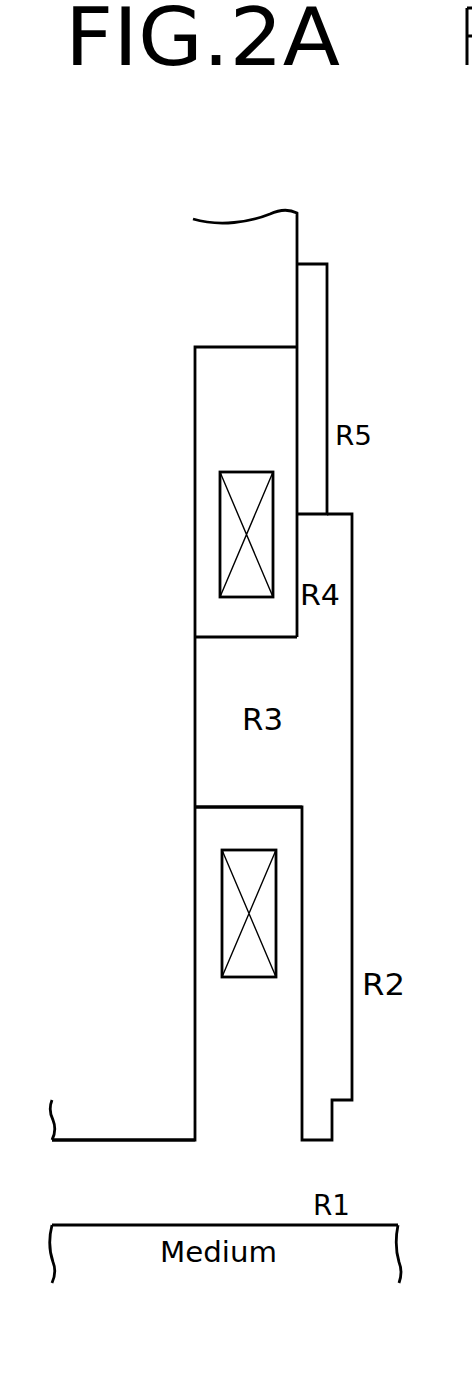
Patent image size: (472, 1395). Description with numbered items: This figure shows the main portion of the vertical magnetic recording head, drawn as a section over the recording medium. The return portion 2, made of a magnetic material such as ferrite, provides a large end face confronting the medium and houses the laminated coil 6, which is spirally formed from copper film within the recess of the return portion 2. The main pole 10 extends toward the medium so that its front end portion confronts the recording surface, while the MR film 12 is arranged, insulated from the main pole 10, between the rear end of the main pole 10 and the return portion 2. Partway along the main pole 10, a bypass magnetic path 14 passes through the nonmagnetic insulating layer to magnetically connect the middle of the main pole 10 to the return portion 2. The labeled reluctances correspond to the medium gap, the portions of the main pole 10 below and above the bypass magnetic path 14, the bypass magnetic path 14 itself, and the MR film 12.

The return portion 2 is at (120, 1141).
The laminated coil 6 is at (220, 531).
The main pole 10 is at (352, 737).
The MR film 12 is at (328, 305).
The bypass magnetic path 14 is at (226, 809).